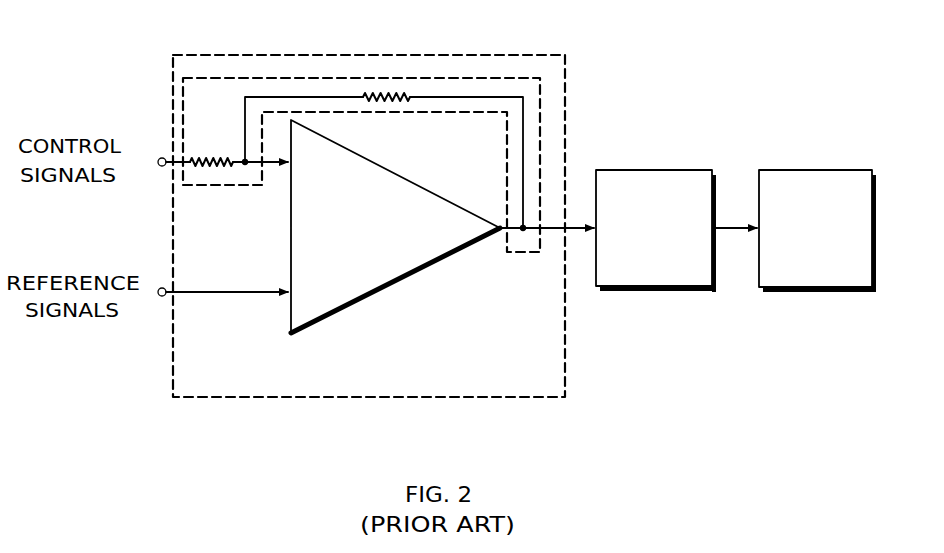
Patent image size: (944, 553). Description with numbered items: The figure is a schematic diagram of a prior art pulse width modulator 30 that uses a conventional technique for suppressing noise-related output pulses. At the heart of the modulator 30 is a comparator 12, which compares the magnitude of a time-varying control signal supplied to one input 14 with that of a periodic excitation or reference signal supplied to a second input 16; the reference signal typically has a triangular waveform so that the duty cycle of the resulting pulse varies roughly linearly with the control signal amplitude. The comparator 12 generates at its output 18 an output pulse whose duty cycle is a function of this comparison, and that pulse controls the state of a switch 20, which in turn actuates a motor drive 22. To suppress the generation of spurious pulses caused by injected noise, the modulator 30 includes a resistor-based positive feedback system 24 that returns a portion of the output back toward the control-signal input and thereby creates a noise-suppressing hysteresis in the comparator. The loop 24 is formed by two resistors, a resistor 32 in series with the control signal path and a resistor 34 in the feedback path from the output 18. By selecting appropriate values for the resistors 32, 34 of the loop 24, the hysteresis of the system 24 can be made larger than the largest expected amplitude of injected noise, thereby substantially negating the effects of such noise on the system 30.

The comparator 12 is at (400, 282).
The input 14 is at (270, 165).
The second input 16 is at (268, 296).
The output 18 is at (512, 232).
The switch 20 is at (660, 170).
The motor drive 22 is at (800, 170).
The resistor-based positive feedback system 24 is at (467, 78).
The modulator 30 is at (538, 386).
The resistor 32 is at (210, 158).
The resistor 34 is at (385, 100).